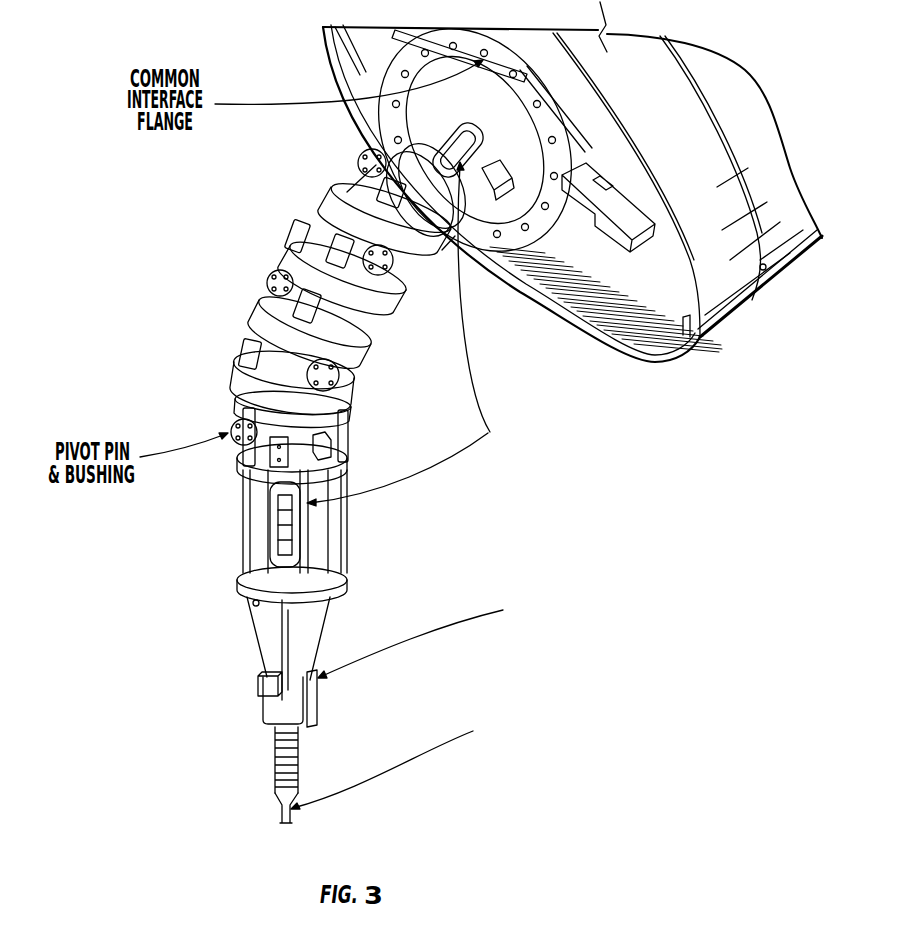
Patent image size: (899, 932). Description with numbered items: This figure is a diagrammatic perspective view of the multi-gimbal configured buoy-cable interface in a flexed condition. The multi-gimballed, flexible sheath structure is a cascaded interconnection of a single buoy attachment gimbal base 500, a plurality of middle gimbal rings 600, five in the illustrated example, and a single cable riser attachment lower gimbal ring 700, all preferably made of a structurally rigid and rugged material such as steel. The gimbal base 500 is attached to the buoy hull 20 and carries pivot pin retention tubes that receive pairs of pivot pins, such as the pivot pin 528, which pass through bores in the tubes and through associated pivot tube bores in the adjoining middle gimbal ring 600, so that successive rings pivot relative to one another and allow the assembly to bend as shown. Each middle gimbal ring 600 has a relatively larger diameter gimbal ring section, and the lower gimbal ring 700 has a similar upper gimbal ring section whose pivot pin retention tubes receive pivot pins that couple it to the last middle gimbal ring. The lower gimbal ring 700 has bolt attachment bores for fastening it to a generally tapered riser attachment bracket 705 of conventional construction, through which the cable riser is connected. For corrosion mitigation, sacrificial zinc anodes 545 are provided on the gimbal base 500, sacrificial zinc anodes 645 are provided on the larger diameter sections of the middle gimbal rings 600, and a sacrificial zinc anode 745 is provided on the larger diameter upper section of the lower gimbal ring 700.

The hull / vehicle 20 is at (722, 322).
The buoy attachment gimbal base 500 is at (278, 224).
The pivot pin 528 is at (400, 283).
The sacrificial zinc anodes 545 is at (495, 183).
The middle gimbal rings 600 is at (248, 307).
The sacrificial zinc anodes 645 is at (367, 378).
The cable riser attachment lower gimbal ring 700 is at (323, 392).
The riser attachment bracket 705 is at (252, 636).
The sacrificial zinc anode 745 is at (277, 460).